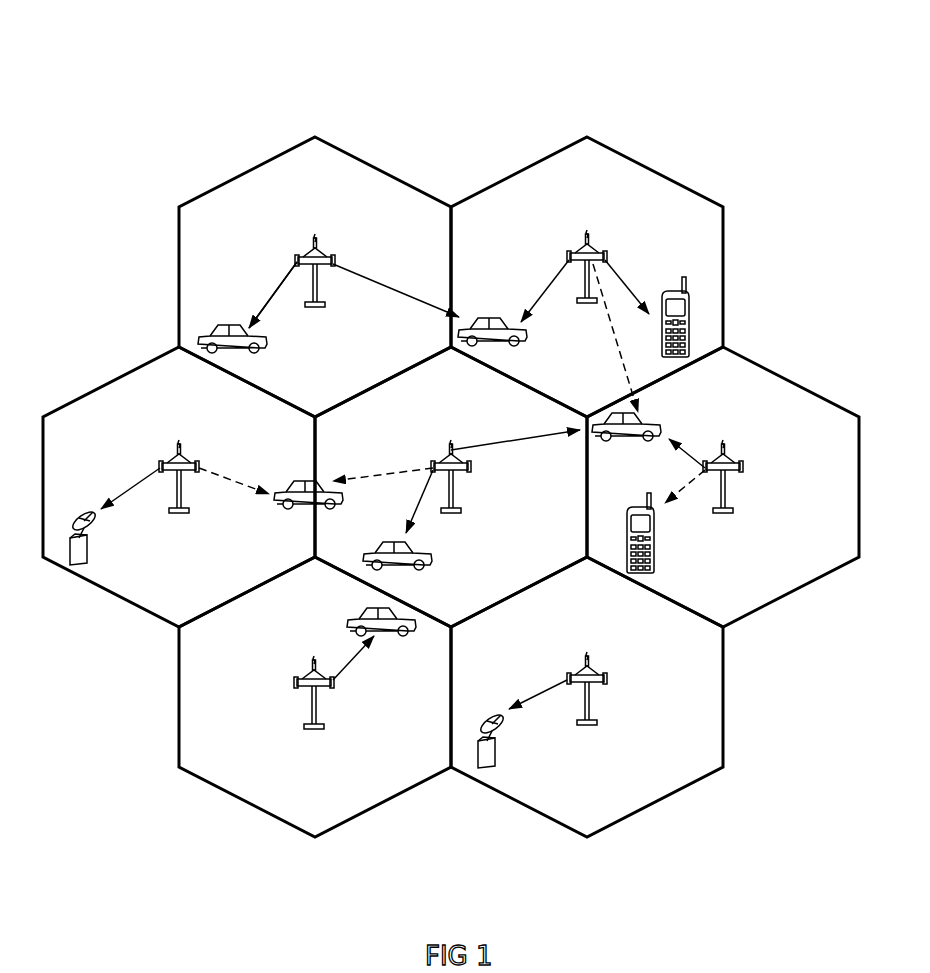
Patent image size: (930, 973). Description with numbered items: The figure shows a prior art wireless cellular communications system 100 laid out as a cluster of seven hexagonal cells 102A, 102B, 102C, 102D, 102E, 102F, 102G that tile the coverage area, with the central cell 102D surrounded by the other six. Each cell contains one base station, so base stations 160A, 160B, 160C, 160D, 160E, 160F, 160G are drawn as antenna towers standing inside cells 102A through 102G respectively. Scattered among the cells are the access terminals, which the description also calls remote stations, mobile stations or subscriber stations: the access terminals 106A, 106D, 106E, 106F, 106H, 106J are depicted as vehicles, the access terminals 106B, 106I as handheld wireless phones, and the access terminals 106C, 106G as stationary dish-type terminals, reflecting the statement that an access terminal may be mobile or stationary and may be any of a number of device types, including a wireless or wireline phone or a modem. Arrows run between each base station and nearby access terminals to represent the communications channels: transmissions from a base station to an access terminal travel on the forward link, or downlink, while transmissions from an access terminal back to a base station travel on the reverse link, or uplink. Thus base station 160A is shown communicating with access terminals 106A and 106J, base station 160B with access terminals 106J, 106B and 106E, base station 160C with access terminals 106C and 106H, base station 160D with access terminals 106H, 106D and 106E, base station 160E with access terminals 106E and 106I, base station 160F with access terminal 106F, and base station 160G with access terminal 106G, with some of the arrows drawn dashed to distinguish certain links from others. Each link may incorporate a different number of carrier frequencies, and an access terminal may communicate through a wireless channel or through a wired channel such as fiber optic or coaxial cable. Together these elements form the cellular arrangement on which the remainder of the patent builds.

The wireless cellular communications system 100 is at (726, 63).
The cell 102A is at (228, 181).
The cell 102B is at (677, 183).
The cell 102C is at (114, 381).
The cell 102D is at (473, 394).
The cell 102E is at (792, 382).
The cell 102F is at (216, 786).
The cell 102G is at (690, 785).
The base station 160A is at (354, 269).
The base station 160B is at (585, 307).
The base station 160C is at (185, 463).
The base station 160D is at (432, 465).
The base station 160E is at (704, 464).
The base station 160F is at (334, 679).
The base station 160G is at (558, 674).
The access terminal 106A is at (270, 344).
The access terminal 106B is at (675, 289).
The access terminal 106C is at (88, 555).
The access terminal 106D is at (433, 558).
The access terminal 106E is at (626, 438).
The access terminal 106F is at (412, 634).
The access terminal 106G is at (495, 758).
The access terminal 106H is at (273, 503).
The access terminal 106I is at (661, 548).
The access terminal 106J is at (496, 318).